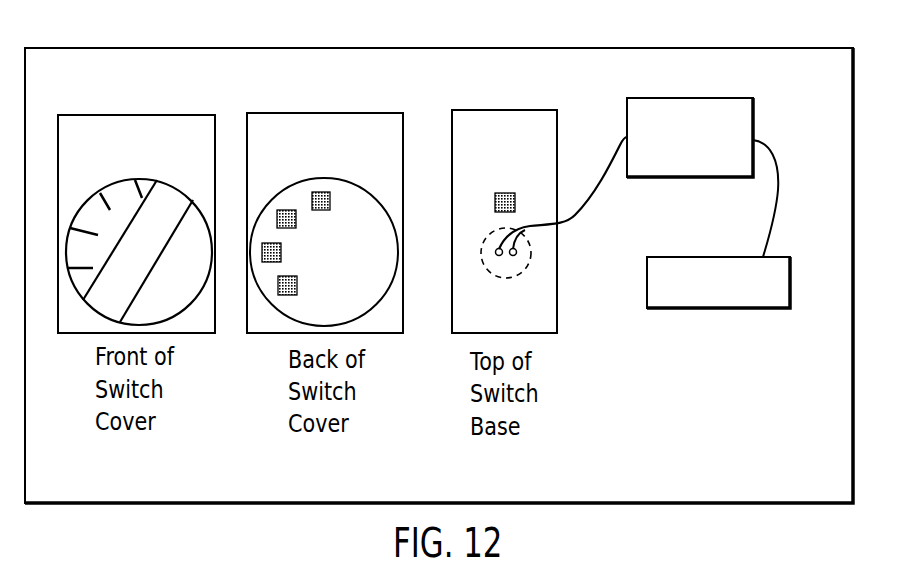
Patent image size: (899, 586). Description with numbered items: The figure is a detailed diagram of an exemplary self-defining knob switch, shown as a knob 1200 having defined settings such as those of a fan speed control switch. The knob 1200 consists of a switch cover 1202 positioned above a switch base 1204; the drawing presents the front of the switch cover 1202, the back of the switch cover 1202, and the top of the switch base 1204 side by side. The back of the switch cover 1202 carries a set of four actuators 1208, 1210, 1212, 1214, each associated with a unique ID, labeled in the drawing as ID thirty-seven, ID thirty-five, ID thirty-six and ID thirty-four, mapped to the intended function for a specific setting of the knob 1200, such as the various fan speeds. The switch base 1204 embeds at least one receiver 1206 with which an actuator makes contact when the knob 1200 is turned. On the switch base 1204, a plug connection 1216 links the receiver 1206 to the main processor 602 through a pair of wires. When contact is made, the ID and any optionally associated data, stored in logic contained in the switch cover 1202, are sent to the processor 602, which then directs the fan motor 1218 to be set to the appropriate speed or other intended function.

The knob 1200 is at (830, 38).
The switch cover 1202 is at (203, 240).
The switch base 1204 is at (383, 237).
The receiver 1206 is at (507, 192).
The actuator 1208 is at (323, 192).
The actuator 1210 is at (290, 208).
The actuator 1212 is at (262, 252).
The actuator 1214 is at (278, 286).
The tag reader connector 1216 is at (553, 250).
The fan motor 1218 is at (690, 255).
The processor 602 is at (753, 120).